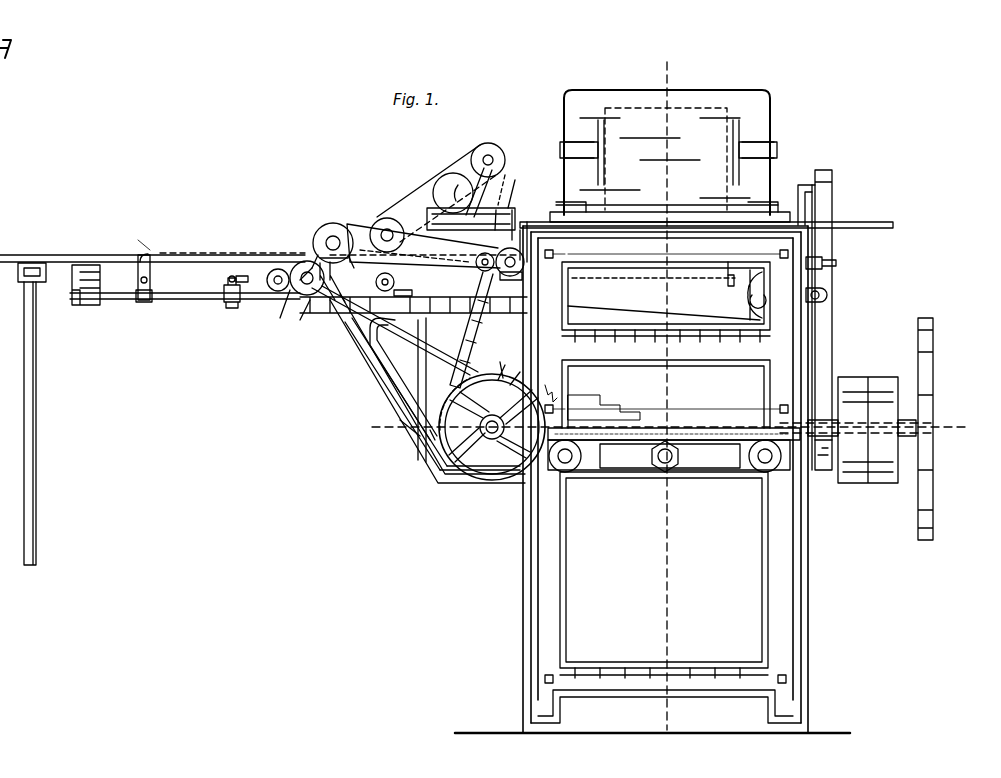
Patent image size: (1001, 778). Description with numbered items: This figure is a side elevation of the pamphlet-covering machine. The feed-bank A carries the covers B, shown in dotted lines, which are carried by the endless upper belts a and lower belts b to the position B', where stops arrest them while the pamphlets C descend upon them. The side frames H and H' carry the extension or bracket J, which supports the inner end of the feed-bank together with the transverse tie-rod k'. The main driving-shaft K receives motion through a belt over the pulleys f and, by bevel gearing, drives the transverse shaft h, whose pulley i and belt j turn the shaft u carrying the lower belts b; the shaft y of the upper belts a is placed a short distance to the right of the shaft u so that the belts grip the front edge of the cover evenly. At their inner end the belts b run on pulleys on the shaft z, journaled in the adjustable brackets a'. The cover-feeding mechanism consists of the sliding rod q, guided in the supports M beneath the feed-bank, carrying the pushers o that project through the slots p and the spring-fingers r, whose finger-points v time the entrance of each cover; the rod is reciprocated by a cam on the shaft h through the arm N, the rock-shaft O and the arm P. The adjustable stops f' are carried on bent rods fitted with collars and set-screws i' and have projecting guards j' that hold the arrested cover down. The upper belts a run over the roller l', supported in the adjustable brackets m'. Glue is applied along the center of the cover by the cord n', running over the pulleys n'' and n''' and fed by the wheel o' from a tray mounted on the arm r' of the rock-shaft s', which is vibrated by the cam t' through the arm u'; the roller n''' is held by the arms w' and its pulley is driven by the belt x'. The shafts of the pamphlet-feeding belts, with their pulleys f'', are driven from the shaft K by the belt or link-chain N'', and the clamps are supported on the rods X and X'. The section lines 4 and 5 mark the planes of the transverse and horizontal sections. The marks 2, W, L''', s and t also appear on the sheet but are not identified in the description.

The section line 2 is at (471, 199).
The section line 4 is at (666, 387).
The section line 5 is at (667, 426).
The feed-bank A is at (74, 256).
The covers B is at (232, 243).
The cover position B' is at (666, 291).
The pamphlets C is at (668, 152).
The side frame H is at (664, 575).
The side frame H' is at (676, 479).
The extension or bracket J is at (418, 440).
The main driving-shaft K is at (934, 429).
The upper cross rod L''' is at (706, 323).
The guides or supports M is at (86, 297).
The arm N is at (823, 320).
The belt or link-chain N'' is at (836, 390).
The rock-shaft O is at (408, 432).
The arm P is at (419, 390).
The hopper base plate W is at (674, 166).
The rod X is at (765, 468).
The rod X' is at (669, 468).
The upper feed-belts a is at (423, 238).
The adjustable brackets a' is at (832, 295).
The lower feed-belts b is at (626, 279).
The pulleys f is at (857, 417).
The adjustable stops f' is at (737, 256).
The pulleys f'' is at (678, 468).
The transverse shaft h is at (490, 420).
The pulley i is at (547, 388).
The collars and set-screws i' is at (399, 376).
The belt j is at (395, 333).
The projecting guards j' is at (713, 263).
The transverse tie-rod k' is at (277, 299).
The roller l' is at (523, 268).
The brackets m' is at (535, 228).
The cord or thread n' is at (436, 193).
The pulley or gumming-roller n'' is at (387, 224).
The roller n''' is at (500, 157).
The pushers o is at (144, 267).
The wheel o' is at (453, 193).
The slots p is at (502, 212).
The sliding rod or bar q is at (184, 300).
The spring-fingers r is at (243, 279).
The arm r' is at (394, 276).
The slide s is at (153, 264).
The rock-shaft s' is at (500, 252).
The bracket t is at (222, 289).
The cam t' is at (499, 362).
The shaft u is at (302, 295).
The arm u' is at (471, 330).
The finger-points v is at (310, 260).
The arms w' is at (513, 181).
The belt x' is at (525, 187).
The shaft y is at (334, 236).
The shaft z is at (750, 298).